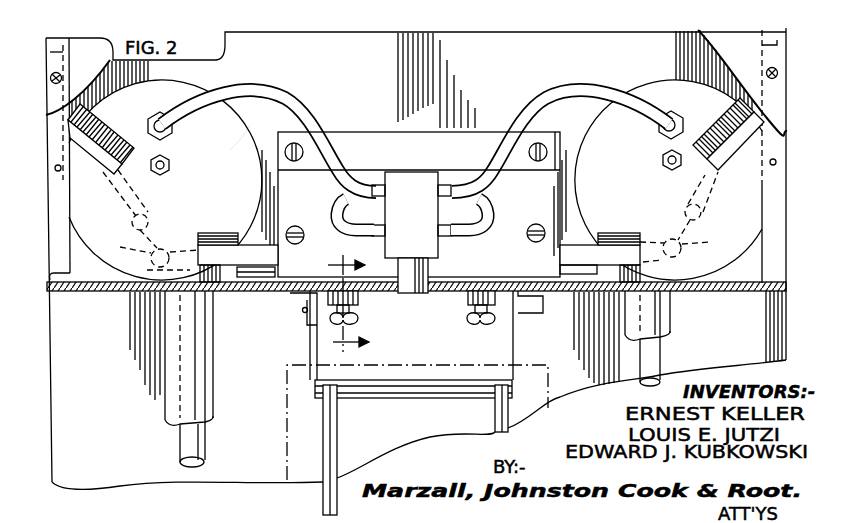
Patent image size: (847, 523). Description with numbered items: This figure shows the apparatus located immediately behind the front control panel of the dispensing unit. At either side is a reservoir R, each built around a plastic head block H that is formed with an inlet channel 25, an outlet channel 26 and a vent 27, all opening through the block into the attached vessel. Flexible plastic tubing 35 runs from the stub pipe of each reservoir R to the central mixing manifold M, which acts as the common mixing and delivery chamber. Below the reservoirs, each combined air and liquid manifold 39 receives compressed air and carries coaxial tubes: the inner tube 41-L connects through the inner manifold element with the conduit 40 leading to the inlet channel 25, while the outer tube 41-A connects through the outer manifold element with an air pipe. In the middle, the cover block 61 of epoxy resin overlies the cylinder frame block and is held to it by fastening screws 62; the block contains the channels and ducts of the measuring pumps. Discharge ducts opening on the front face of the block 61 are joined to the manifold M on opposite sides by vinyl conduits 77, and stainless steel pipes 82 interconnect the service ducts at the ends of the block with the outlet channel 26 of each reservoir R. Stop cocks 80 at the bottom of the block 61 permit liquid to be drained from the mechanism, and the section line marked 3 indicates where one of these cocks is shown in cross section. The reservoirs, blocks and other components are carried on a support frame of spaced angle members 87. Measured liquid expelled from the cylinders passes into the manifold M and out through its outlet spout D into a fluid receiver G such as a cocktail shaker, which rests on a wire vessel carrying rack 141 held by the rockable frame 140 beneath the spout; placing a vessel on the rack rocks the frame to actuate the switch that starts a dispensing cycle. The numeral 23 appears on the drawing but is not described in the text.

The nut 23 is at (416, 162).
The inlet channel 25 is at (150, 219).
The outlet channel 26 is at (150, 252).
The vent 27 is at (152, 118).
The flexible plastic tubing 35 is at (275, 100).
The combined air and liquid manifold 39 is at (213, 291).
The conduit 40 is at (416, 139).
The outer tube 41-A is at (168, 364).
The inner tube 41-L is at (182, 441).
The cover block 61 is at (396, 137).
The fastening screws 62 is at (300, 146).
The conduits 77 is at (351, 226).
The stop cocks 80 is at (358, 300).
The delivery pipe 82 is at (256, 254).
The angle members 87 is at (260, 278).
The rockable frame 140 is at (512, 338).
The vessel carrying rack 141 is at (340, 432).
The section line 3- 3 is at (354, 304).
The outlet spout D is at (409, 295).
The fluid receiver G is at (285, 407).
The block H is at (235, 147).
The mixing manifold M is at (411, 215).
The reservoirs R is at (97, 262).